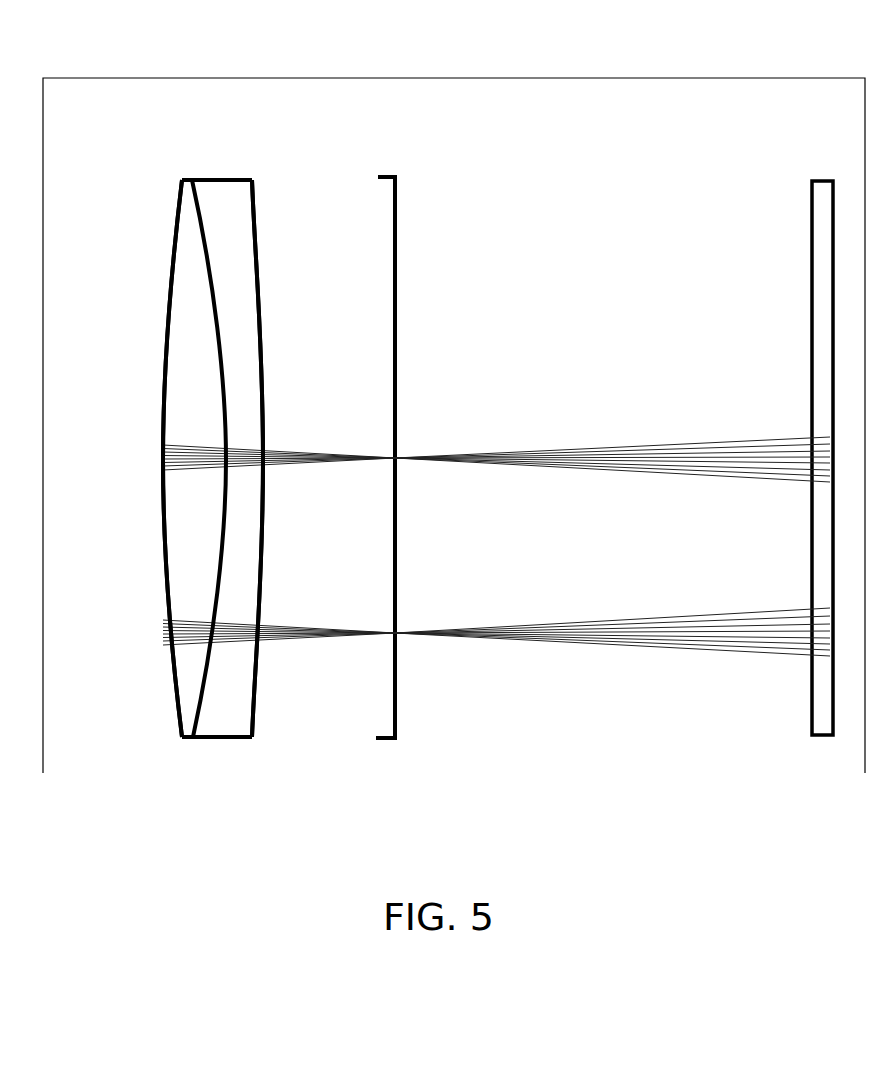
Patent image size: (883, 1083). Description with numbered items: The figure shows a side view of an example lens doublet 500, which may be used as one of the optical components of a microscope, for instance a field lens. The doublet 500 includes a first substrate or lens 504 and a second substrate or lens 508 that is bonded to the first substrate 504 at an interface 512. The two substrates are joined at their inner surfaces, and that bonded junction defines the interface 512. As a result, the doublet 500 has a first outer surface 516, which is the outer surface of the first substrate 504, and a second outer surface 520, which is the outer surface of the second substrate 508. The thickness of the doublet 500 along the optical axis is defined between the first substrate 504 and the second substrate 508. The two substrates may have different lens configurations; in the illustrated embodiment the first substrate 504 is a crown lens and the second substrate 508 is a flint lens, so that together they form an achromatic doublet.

The lens doublet 500 is at (246, 62).
The first substrate 504 is at (172, 300).
The second substrate 508 is at (240, 244).
The interface 512 is at (226, 392).
The first outer surface 516 is at (163, 542).
The second outer surface 520 is at (262, 382).